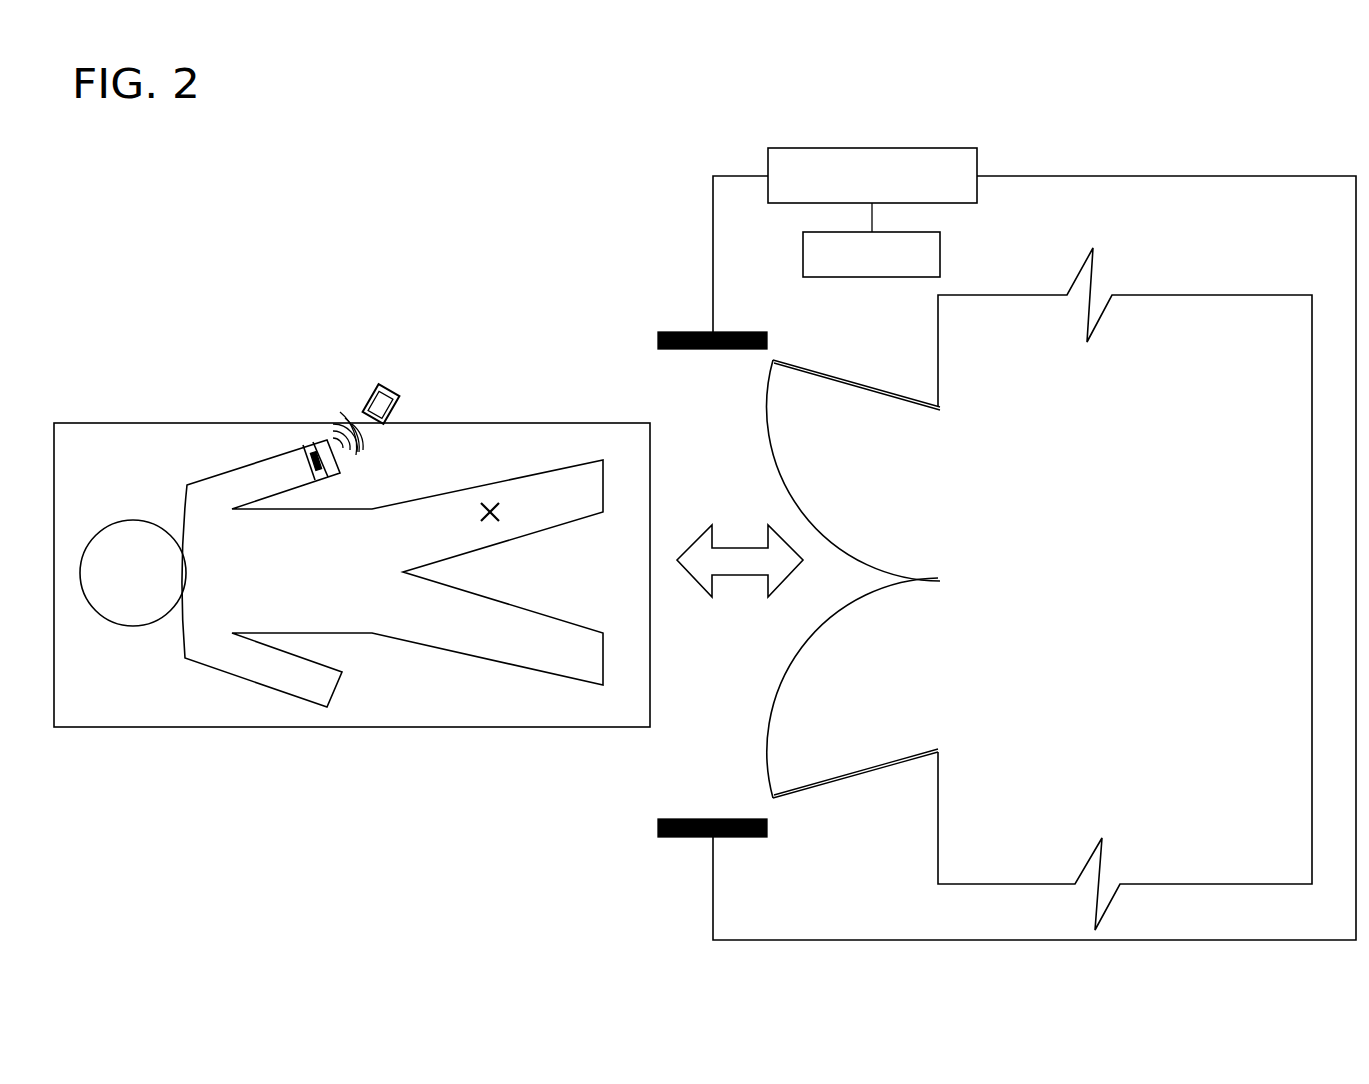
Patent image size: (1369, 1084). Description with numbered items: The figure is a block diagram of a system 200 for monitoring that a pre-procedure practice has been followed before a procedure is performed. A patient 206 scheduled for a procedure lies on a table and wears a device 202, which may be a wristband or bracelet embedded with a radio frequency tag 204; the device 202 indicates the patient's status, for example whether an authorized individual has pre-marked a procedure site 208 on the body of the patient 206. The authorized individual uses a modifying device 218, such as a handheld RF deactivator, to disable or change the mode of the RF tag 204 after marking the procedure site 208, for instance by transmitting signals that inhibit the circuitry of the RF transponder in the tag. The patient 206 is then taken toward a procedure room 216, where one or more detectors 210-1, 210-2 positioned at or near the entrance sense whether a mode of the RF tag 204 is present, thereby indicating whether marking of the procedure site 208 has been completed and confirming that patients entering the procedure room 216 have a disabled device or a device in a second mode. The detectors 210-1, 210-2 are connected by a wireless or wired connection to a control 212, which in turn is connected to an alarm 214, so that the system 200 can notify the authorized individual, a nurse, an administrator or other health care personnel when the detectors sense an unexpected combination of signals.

The system 200 is at (142, 203).
The device 202 is at (303, 448).
The radio frequency tag 204 is at (303, 445).
The patient 206 is at (81, 565).
The procedure site 208 is at (478, 502).
The detector 210-1 is at (658, 830).
The detector 210-2 is at (658, 332).
The control 212 is at (872, 148).
The alarm 214 is at (940, 252).
The procedure room 216 is at (1188, 295).
The modifying device 218 is at (385, 387).